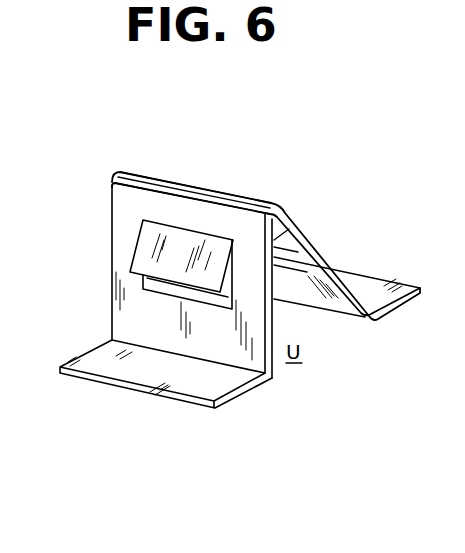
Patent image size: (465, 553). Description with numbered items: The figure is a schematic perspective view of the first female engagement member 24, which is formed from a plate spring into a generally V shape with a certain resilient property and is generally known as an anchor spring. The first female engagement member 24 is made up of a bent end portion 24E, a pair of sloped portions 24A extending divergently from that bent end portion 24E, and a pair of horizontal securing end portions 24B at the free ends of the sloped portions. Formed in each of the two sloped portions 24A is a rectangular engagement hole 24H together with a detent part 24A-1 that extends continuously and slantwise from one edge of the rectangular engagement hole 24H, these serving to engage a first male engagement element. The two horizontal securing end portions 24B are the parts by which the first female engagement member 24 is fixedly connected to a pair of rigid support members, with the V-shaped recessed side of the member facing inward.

The first female engagement member 24 is at (168, 170).
The sloped portion 24A is at (125, 217).
The detent part 24A-1 is at (142, 244).
The horizontal securing end portion 24B is at (149, 368).
The bent end portion 24E is at (198, 185).
The rectangular engagement hole 24H is at (217, 310).